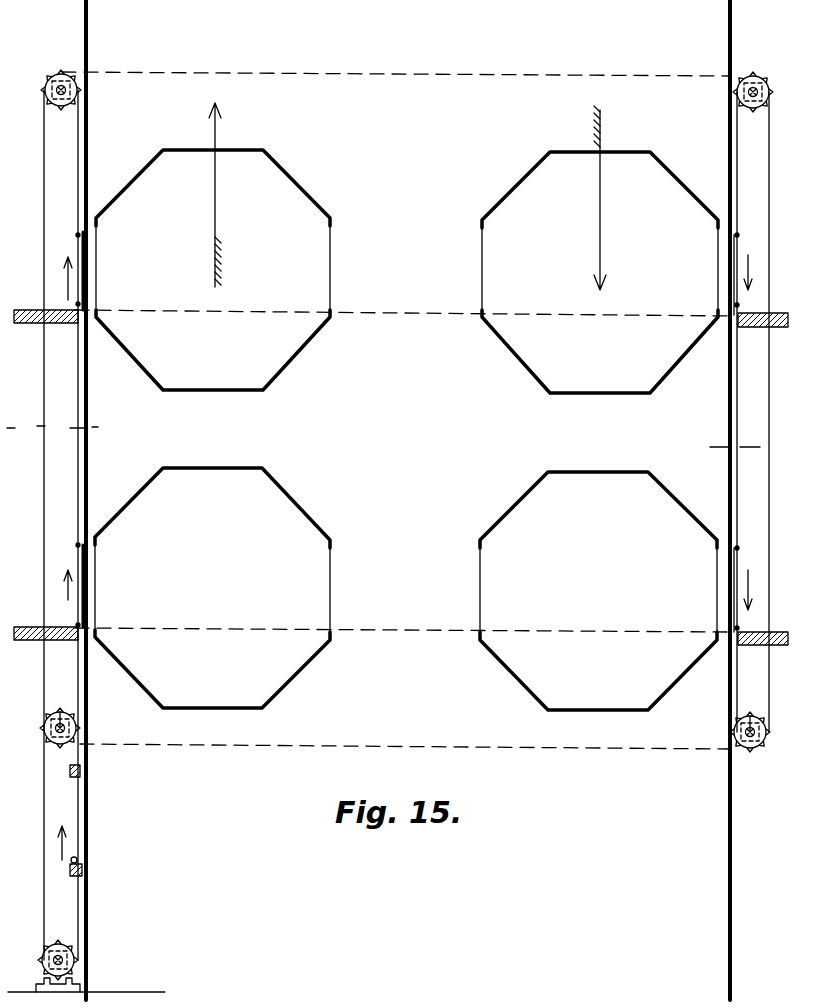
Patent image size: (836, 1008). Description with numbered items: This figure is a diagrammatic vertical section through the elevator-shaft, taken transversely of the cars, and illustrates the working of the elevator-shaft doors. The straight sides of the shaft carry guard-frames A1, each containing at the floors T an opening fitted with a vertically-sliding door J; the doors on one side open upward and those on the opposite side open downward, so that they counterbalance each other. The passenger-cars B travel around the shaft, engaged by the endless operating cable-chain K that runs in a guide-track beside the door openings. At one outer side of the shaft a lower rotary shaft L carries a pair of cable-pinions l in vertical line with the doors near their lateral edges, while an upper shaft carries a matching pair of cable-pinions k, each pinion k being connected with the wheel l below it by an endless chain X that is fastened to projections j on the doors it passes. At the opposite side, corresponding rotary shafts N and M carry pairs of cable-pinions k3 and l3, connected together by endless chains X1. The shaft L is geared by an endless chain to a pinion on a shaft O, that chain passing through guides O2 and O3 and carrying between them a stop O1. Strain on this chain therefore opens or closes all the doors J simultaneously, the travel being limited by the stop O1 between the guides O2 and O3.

The guard-frame A1 is at (91, 27).
The passenger-car B is at (406, 406).
The vertically-sliding door J is at (87, 270).
The projection j is at (78, 233).
The floor T is at (20, 310).
The endless chain X is at (59, 428).
The endless chain X1 is at (741, 446).
The endless operating cable-chain K is at (62, 85).
The cable-pinion k is at (53, 110).
The cable-pinion k3 is at (783, 58).
The rotary shaft M is at (762, 80).
The rotary shaft L is at (55, 732).
The cable-pinion l is at (58, 715).
The cable-pinion l3 is at (762, 727).
The rotary shaft N is at (753, 735).
The shaft O is at (58, 963).
The stop O1 is at (82, 862).
The guide O2 is at (82, 872).
The guide O3 is at (90, 773).